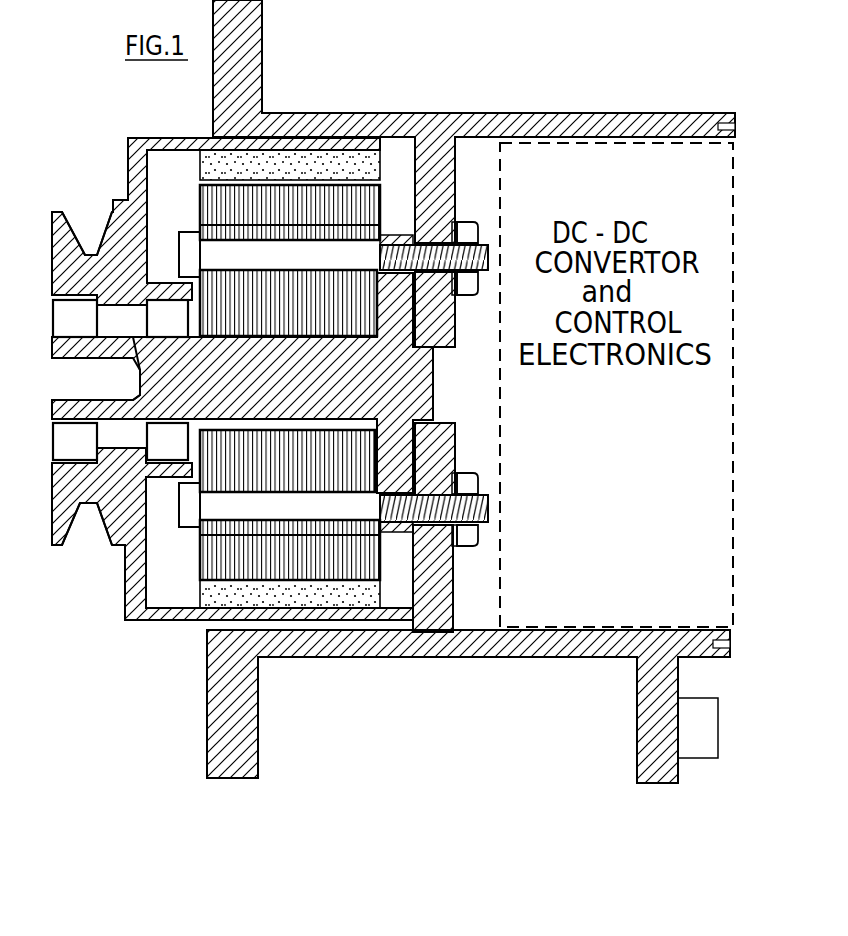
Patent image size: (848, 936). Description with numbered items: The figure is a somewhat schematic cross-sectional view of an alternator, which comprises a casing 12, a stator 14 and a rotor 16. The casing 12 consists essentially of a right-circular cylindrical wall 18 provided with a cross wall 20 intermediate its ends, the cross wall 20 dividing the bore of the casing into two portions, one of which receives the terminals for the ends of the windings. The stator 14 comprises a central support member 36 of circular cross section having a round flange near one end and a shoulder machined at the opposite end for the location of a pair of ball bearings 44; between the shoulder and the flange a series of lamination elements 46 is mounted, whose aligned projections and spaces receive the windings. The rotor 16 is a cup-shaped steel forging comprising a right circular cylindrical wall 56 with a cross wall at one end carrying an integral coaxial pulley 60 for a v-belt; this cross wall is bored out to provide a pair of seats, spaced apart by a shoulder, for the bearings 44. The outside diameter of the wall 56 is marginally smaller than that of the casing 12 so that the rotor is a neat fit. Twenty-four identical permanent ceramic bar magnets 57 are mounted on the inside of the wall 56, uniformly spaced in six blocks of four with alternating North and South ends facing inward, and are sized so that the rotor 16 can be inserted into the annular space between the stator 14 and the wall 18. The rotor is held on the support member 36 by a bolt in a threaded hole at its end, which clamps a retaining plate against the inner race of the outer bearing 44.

The casing 12 is at (470, 97).
The stator 14 is at (444, 399).
The rotor 16 is at (120, 179).
The right-circular cylindrical wall 18 is at (553, 640).
The cross wall 20 is at (433, 573).
The central support member 36 is at (47, 353).
The ball bearings 44 is at (158, 447).
The lamination elements 46 is at (216, 210).
The right circular cylindrical wall 56 is at (348, 150).
The permanent ceramic bar magnets 57 is at (258, 166).
The pulley 60 is at (67, 184).